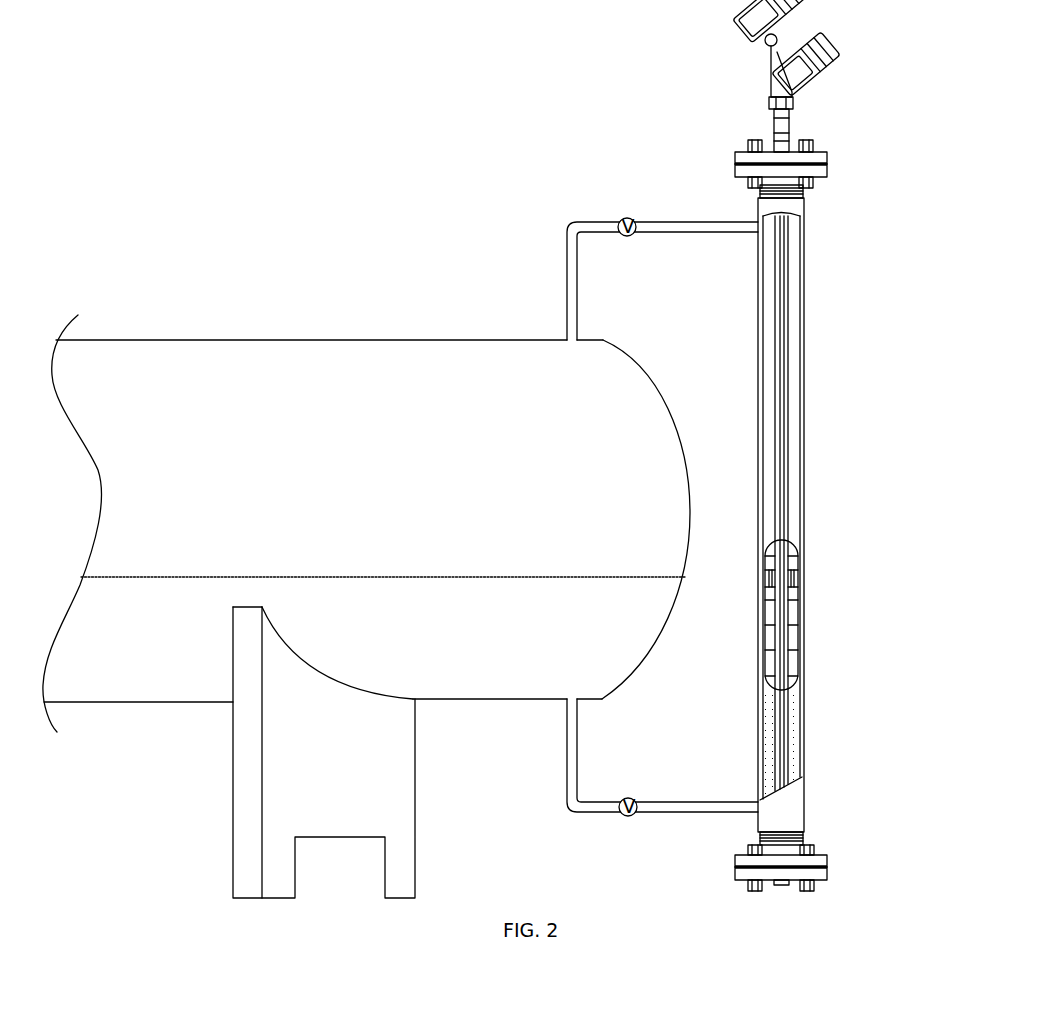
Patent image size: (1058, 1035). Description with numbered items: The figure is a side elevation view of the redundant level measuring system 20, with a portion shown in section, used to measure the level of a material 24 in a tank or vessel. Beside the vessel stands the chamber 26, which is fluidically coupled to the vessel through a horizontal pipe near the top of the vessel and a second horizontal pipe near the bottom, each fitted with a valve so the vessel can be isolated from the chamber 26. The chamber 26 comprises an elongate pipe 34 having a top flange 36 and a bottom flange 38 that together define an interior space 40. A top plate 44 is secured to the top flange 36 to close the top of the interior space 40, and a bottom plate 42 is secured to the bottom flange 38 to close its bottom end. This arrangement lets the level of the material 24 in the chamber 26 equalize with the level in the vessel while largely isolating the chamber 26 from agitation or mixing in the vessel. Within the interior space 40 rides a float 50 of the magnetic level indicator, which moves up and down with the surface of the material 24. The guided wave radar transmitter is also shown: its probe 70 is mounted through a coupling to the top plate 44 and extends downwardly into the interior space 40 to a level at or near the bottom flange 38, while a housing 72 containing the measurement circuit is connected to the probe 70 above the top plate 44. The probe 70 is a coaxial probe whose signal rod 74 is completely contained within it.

The redundant level measuring system 20 is at (826, 452).
The material 24 is at (819, 515).
The chamber 26 is at (792, 452).
The elongate pipe 34 is at (826, 209).
The top flange 36 is at (813, 177).
The bottom flange 38 is at (814, 849).
The interior space 40 is at (827, 503).
The bottom plate 42 is at (814, 885).
The top plate 44 is at (813, 147).
The float 50 is at (828, 598).
The probe 70 is at (832, 744).
The housing 72 is at (797, 76).
The signal rod 74 is at (738, 501).